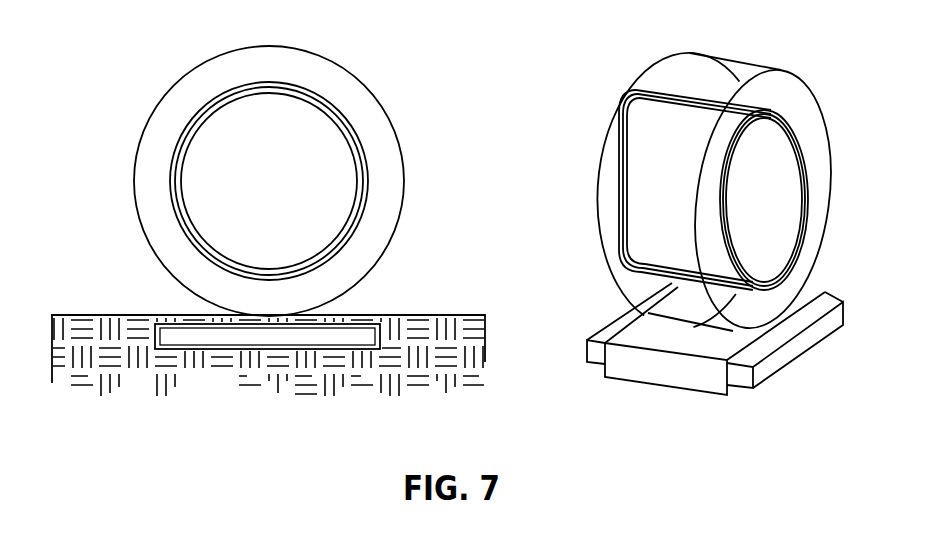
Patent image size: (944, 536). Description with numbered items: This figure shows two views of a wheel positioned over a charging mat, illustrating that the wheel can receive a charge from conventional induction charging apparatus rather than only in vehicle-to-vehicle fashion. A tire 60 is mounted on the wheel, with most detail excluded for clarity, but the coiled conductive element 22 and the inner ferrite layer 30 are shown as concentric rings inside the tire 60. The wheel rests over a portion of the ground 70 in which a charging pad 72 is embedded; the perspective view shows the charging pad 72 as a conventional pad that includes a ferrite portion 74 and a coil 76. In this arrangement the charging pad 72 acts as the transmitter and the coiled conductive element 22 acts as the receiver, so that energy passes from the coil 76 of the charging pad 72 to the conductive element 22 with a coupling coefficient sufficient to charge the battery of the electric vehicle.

The conductive element 22 is at (347, 120).
The inner ferrite layer 30 is at (357, 158).
The tire 60 is at (333, 63).
The ground 70 is at (82, 337).
The charging pad 72 is at (188, 332).
The ferrite portion 74 is at (775, 360).
The coil 76 is at (663, 377).